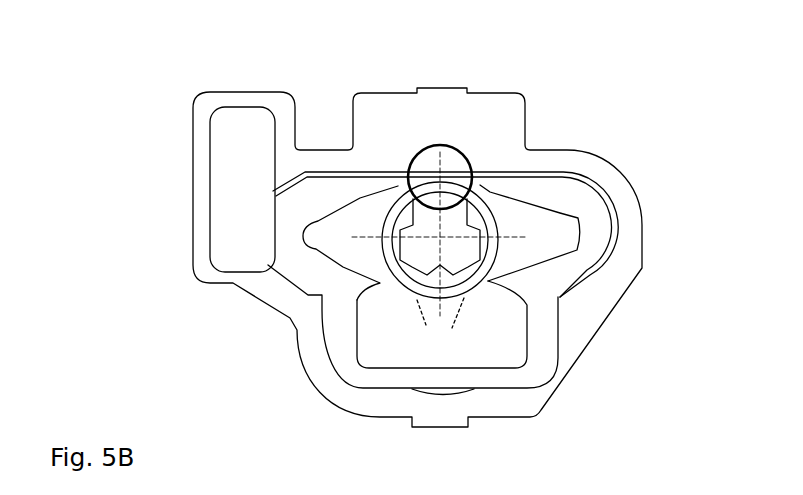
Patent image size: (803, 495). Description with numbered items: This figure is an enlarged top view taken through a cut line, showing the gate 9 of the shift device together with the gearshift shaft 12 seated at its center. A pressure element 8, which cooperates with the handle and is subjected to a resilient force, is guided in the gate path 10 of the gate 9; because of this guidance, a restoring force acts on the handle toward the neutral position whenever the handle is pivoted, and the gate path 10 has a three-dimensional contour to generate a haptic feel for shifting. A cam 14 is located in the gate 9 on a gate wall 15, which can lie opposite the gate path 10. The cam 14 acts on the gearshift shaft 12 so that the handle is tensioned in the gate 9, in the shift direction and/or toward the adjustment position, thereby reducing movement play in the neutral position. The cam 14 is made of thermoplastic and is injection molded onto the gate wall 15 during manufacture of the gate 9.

The pressure element 8 is at (421, 248).
The gate 9 is at (587, 328).
The gate path 10 is at (443, 343).
The gearshift shaft 12 is at (415, 289).
The cam 14 is at (434, 172).
The gate wall 15 is at (560, 166).